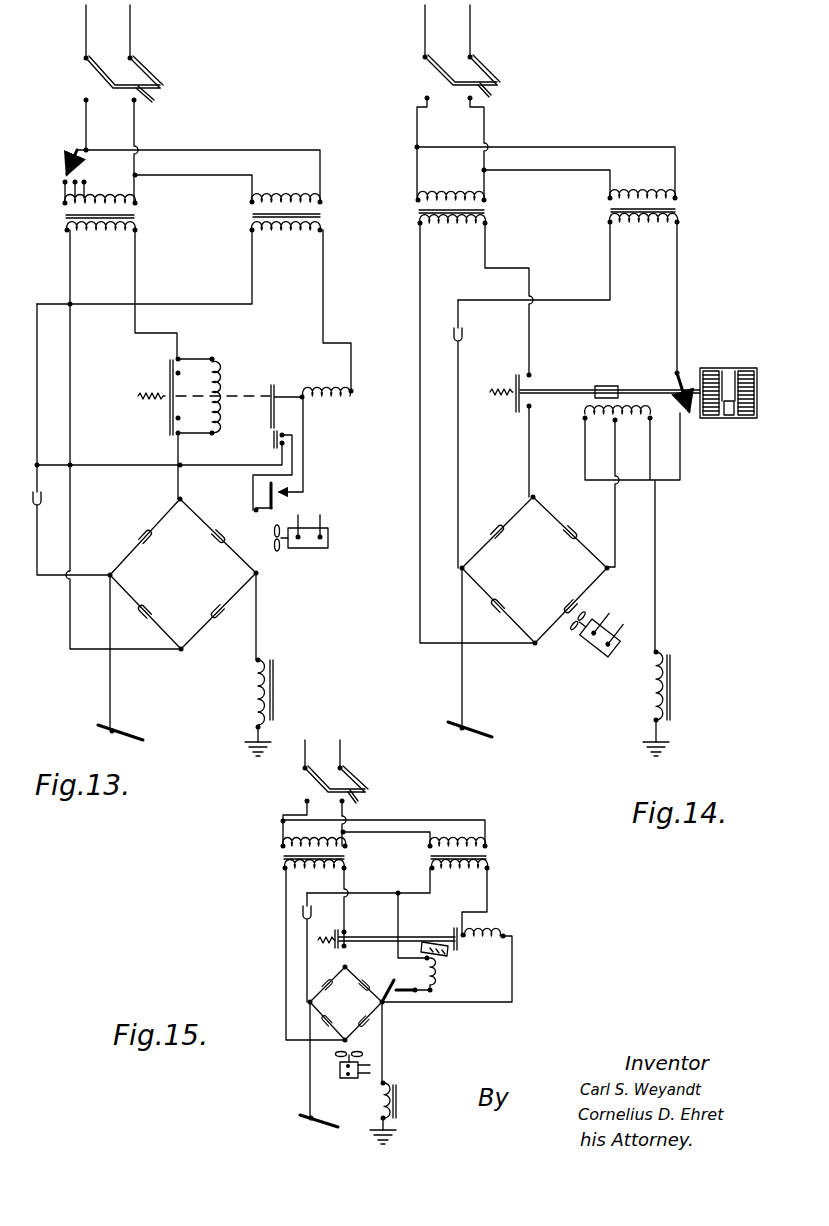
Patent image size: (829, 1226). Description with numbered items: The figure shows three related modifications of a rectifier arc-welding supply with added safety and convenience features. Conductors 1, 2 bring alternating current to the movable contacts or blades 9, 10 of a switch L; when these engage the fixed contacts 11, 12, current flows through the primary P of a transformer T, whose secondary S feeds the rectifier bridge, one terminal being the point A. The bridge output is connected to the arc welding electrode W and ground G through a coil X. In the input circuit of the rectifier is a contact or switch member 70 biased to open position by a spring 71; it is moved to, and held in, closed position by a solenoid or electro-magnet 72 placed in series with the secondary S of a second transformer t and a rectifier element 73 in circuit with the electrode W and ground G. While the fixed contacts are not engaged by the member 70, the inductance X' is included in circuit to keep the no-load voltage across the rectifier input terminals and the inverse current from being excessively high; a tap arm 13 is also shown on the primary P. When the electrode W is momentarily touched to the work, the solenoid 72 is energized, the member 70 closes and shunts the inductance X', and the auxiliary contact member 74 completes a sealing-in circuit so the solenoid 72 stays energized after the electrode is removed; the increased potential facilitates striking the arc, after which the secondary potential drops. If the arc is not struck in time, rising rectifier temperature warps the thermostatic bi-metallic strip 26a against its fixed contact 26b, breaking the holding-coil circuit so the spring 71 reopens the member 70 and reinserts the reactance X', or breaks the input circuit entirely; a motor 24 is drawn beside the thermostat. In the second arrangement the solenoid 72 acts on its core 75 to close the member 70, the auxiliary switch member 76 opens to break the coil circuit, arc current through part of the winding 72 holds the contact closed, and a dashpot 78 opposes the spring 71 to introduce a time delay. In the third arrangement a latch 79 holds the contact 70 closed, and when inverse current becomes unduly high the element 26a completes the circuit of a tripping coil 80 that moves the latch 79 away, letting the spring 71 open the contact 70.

In FIG. 13, the conductor 1 is at (84, 48).
In FIG. 14, the conductor 1 is at (422, 45).
In FIG. 15, the conductor 1 is at (307, 748).
In FIG. 13, the conductor 2 is at (140, 33).
In FIG. 14, the conductor 2 is at (474, 42).
In FIG. 15, the conductor 2 is at (345, 750).
In FIG. 13, the movable contact or blade 9 is at (94, 75).
In FIG. 14, the movable contact or blade 9 is at (433, 72).
In FIG. 15, the movable contact or blade 9 is at (305, 781).
In FIG. 13, the movable contact or blade 10 is at (150, 70).
In FIG. 14, the movable contact or blade 10 is at (485, 72).
In FIG. 15, the movable contact or blade 10 is at (365, 777).
In FIG. 13, the fixed contact 11 is at (82, 105).
In FIG. 14, the fixed contact 11 is at (430, 103).
In FIG. 15, the fixed contact 11 is at (300, 805).
In FIG. 13, the fixed contact 12 is at (138, 105).
In FIG. 14, the fixed contact 12 is at (482, 100).
In FIG. 15, the fixed contact 12 is at (350, 805).
In FIG. 13, the tap switch arm 13 is at (72, 164).
In FIG. 13, the motor 24 is at (312, 549).
In FIG. 14, the motor 24 is at (605, 660).
In FIG. 15, the motor 24 is at (340, 1068).
In FIG. 13, the bi-metallic strip 26a is at (290, 509).
In FIG. 15, the bi-metallic strip 26a is at (388, 1010).
In FIG. 13, the fixed contact 26b is at (290, 492).
In FIG. 15, the fixed contact 26b is at (410, 1000).
In FIG. 13, the contact or switch member 70 is at (168, 372).
In FIG. 14, the contact or switch member 70 is at (515, 372).
In FIG. 15, the contact or switch member 70 is at (340, 934).
In FIG. 13, the spring 71 is at (153, 408).
In FIG. 14, the spring 71 is at (500, 405).
In FIG. 15, the spring 71 is at (326, 946).
In FIG. 13, the solenoid or electro-magnet 72 is at (338, 402).
In FIG. 14, the solenoid or electro-magnet 72 is at (590, 420).
In FIG. 15, the solenoid or electro-magnet 72 is at (505, 928).
In FIG. 13, the rectifier element 73 is at (32, 505).
In FIG. 15, the rectifier element 73 is at (300, 925).
In FIG. 13, the auxiliary contact member 74 is at (270, 438).
In FIG. 14, the core 75 is at (608, 385).
In FIG. 14, the auxiliary switch member 76 is at (685, 372).
In FIG. 14, the dashpot 78 is at (720, 368).
In FIG. 15, the latch 79 is at (445, 960).
In FIG. 15, the tripping coil 80 is at (470, 1004).
In FIG. 13, the primary P is at (95, 193).
In FIG. 14, the primary P is at (450, 195).
In FIG. 15, the primary P is at (300, 841).
In FIG. 13, the secondary S is at (88, 240).
In FIG. 14, the secondary S is at (436, 233).
In FIG. 15, the secondary S is at (292, 885).
In FIG. 13, the transformer T is at (142, 218).
In FIG. 14, the transformer T is at (493, 211).
In FIG. 15, the transformer T is at (352, 858).
In FIG. 13, the transformer t is at (326, 213).
In FIG. 14, the transformer t is at (680, 210).
In FIG. 13, the switch L is at (165, 92).
In FIG. 14, the switch L is at (505, 86).
In FIG. 15, the switch L is at (378, 800).
In FIG. 13, the rectifier input terminal / bridge point A is at (183, 501).
In FIG. 14, the rectifier input terminal / bridge point A is at (535, 570).
In FIG. 15, the rectifier input terminal / bridge point A is at (346, 1004).
In FIG. 13, the arc welding electrode W is at (133, 727).
In FIG. 14, the arc welding electrode W is at (478, 733).
In FIG. 15, the arc welding electrode W is at (308, 1115).
In FIG. 13, the coil X is at (245, 651).
In FIG. 14, the coil X is at (662, 686).
In FIG. 15, the coil X is at (373, 1061).
In FIG. 13, the inductance X' is at (213, 396).
In FIG. 13, the ground G is at (248, 750).
In FIG. 14, the ground G is at (650, 752).
In FIG. 15, the ground G is at (400, 1131).